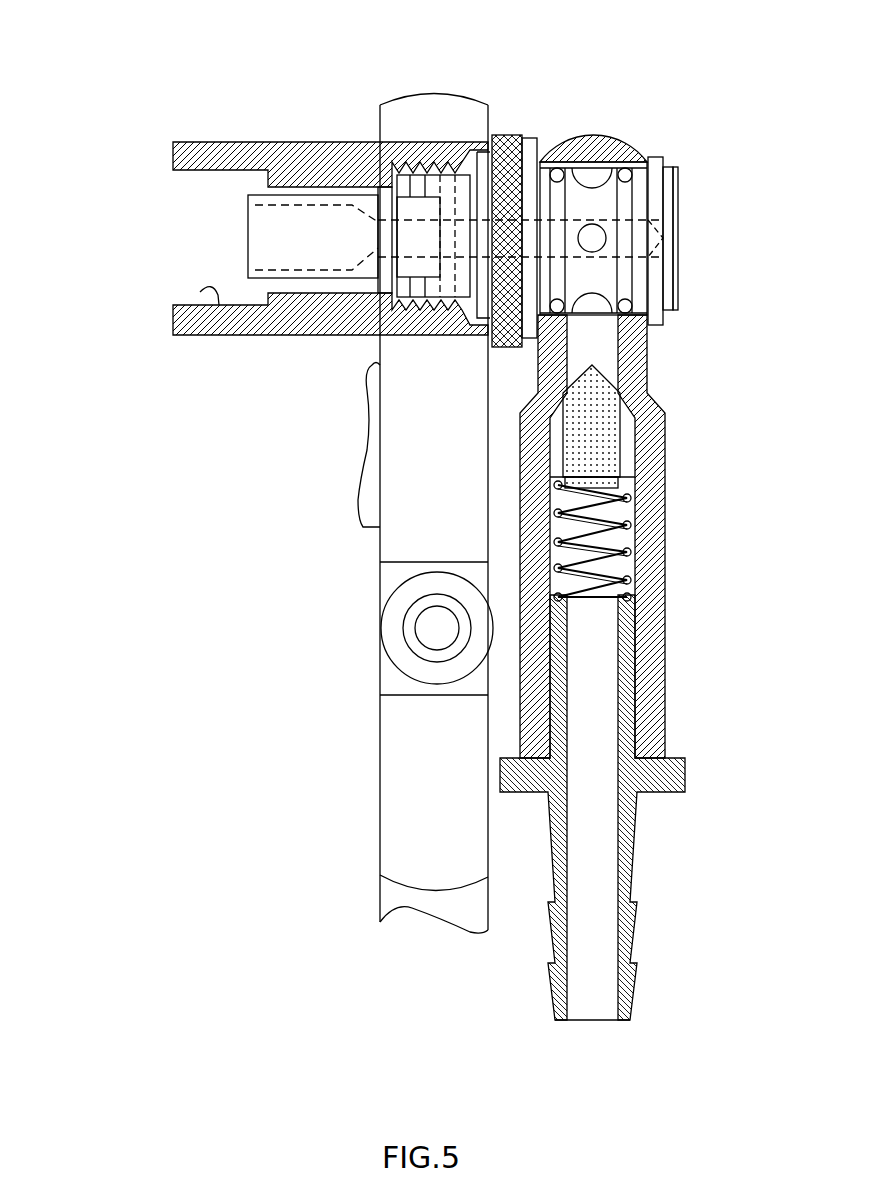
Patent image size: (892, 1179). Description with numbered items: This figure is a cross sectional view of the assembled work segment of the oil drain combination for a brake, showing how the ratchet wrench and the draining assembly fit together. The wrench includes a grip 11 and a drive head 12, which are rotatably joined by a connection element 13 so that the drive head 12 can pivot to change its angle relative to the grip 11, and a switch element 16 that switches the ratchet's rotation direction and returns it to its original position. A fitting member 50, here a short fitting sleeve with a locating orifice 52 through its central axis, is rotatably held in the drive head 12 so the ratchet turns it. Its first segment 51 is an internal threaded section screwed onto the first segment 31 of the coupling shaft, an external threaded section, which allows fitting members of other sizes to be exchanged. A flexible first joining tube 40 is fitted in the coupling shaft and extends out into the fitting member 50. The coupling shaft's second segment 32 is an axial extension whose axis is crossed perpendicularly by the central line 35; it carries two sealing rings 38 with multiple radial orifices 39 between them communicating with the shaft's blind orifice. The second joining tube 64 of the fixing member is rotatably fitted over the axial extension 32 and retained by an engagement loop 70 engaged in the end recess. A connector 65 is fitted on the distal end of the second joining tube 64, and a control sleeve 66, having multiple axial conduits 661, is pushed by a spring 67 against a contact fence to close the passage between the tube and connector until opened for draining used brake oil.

The grip 11 is at (405, 763).
The drive head 12 is at (410, 530).
The connection element 13 is at (430, 627).
The switch element 16 is at (360, 470).
The first segment of coupling shaft 31 is at (463, 165).
The second segment of coupling shaft 32 is at (683, 228).
The central line 35 is at (510, 135).
The sealing rings 38 is at (625, 168).
The radial orifices 39 is at (592, 238).
The first joining tube 40 is at (325, 195).
The fitting member 50 is at (173, 142).
The first segment of fitting member 51 is at (415, 175).
The locating orifice 52 is at (200, 292).
The second joining tube 64 is at (650, 640).
The connector 65 is at (632, 830).
The control sleeve 66 is at (612, 435).
The conduits 661 is at (628, 452).
The spring 67 is at (625, 520).
The engagement loop 70 is at (655, 157).